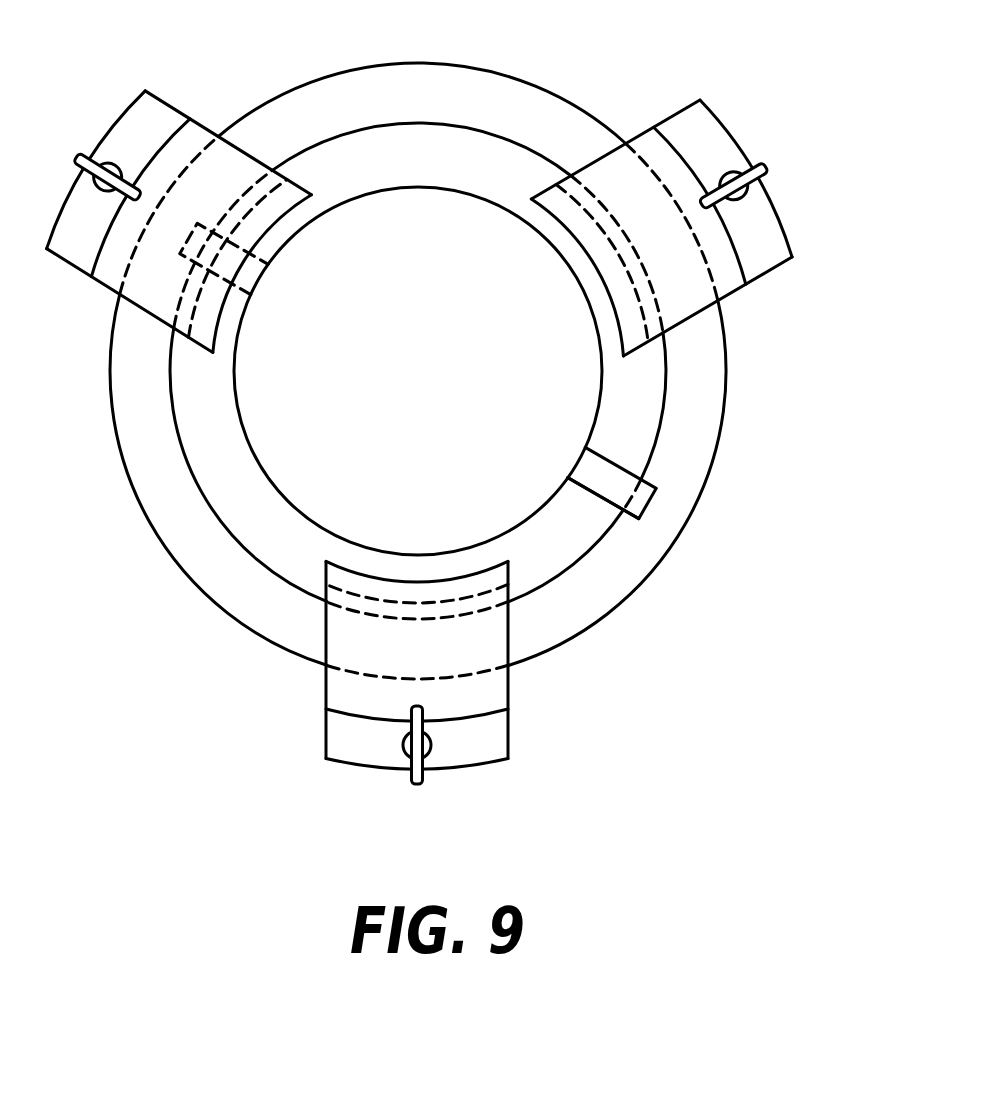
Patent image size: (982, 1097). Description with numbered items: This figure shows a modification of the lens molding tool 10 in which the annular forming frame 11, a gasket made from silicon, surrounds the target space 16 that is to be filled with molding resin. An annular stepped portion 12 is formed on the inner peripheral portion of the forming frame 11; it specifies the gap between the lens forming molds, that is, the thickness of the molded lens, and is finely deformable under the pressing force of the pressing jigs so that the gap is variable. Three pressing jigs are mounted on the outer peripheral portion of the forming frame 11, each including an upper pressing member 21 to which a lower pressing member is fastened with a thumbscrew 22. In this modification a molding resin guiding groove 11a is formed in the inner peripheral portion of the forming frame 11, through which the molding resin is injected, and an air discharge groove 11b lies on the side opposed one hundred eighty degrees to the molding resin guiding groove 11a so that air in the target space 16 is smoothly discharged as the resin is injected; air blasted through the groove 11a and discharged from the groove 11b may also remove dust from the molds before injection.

The lens molding tool 10 is at (760, 398).
The forming frame 11 is at (658, 532).
The molding resin guiding groove 11a is at (252, 243).
The air discharge groove 11b is at (620, 497).
The annular stepped portion 12 is at (623, 452).
The target space 16 is at (435, 377).
The upper pressing member 21 is at (180, 147).
The thumbscrew 22 is at (85, 157).